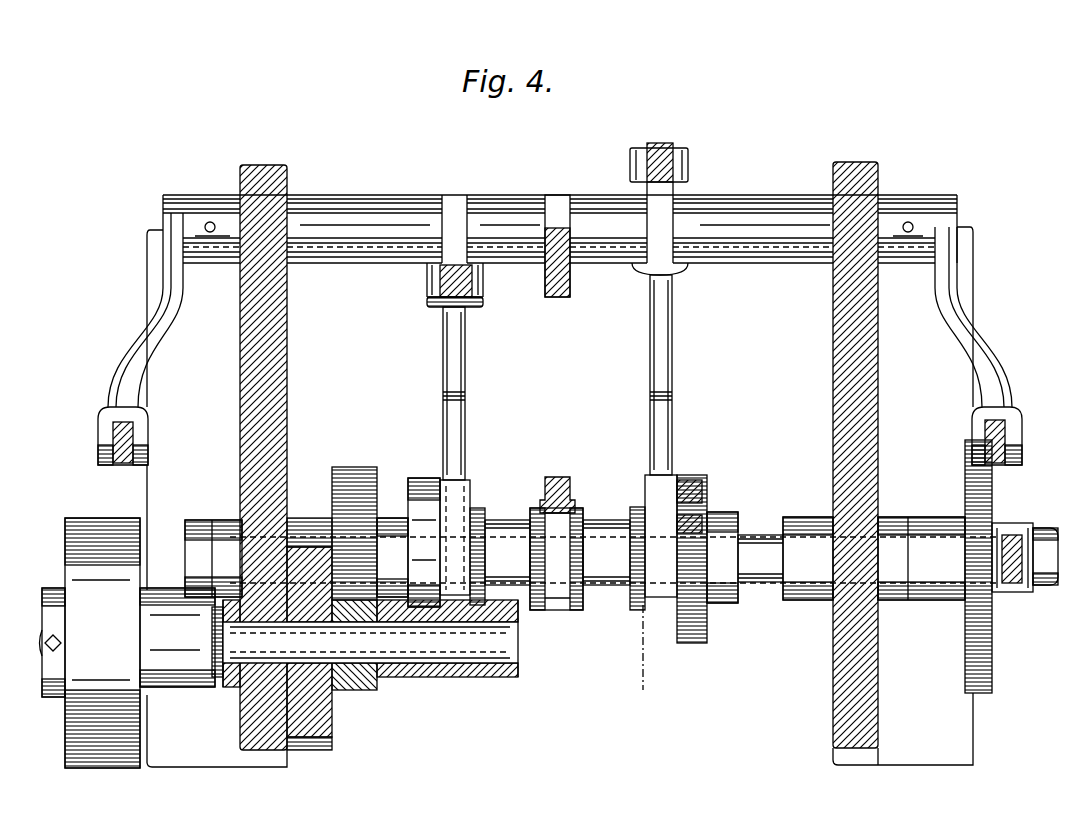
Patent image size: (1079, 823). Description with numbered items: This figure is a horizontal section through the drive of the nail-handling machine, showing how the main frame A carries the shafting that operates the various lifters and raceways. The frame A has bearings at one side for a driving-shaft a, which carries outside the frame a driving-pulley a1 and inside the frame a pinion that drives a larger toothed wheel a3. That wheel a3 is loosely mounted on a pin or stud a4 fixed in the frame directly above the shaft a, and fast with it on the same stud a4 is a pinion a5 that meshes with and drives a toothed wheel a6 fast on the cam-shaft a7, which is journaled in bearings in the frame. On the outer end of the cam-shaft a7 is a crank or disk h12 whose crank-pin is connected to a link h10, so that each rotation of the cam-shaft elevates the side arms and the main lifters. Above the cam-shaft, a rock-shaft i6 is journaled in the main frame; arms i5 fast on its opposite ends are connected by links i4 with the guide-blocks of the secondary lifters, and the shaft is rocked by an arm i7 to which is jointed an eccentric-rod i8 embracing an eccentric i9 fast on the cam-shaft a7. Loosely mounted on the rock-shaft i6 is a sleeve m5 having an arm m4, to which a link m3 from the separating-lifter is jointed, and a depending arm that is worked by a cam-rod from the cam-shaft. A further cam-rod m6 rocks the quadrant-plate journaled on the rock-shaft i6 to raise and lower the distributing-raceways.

The main frame A is at (245, 412).
The driving-shaft a is at (44, 646).
The driving-pulley a1 is at (102, 643).
The toothed wheel a3 is at (325, 716).
The pin or stud a4 is at (518, 646).
The pinion a5 is at (468, 372).
The toothed wheel a6 is at (352, 468).
The cam-shaft a7 is at (760, 545).
The link i4 is at (1028, 428).
The arm i5 is at (983, 322).
The rock-shaft i6 is at (328, 207).
The arm i7 is at (556, 299).
The eccentric-rod i8 is at (562, 475).
The eccentric i9 is at (577, 600).
The link m3 is at (462, 288).
The arm m4 is at (447, 307).
The sleeve m5 is at (478, 215).
The cam-rod m6 is at (665, 358).
The link h10 is at (1003, 535).
The crank or disk h12 is at (980, 497).